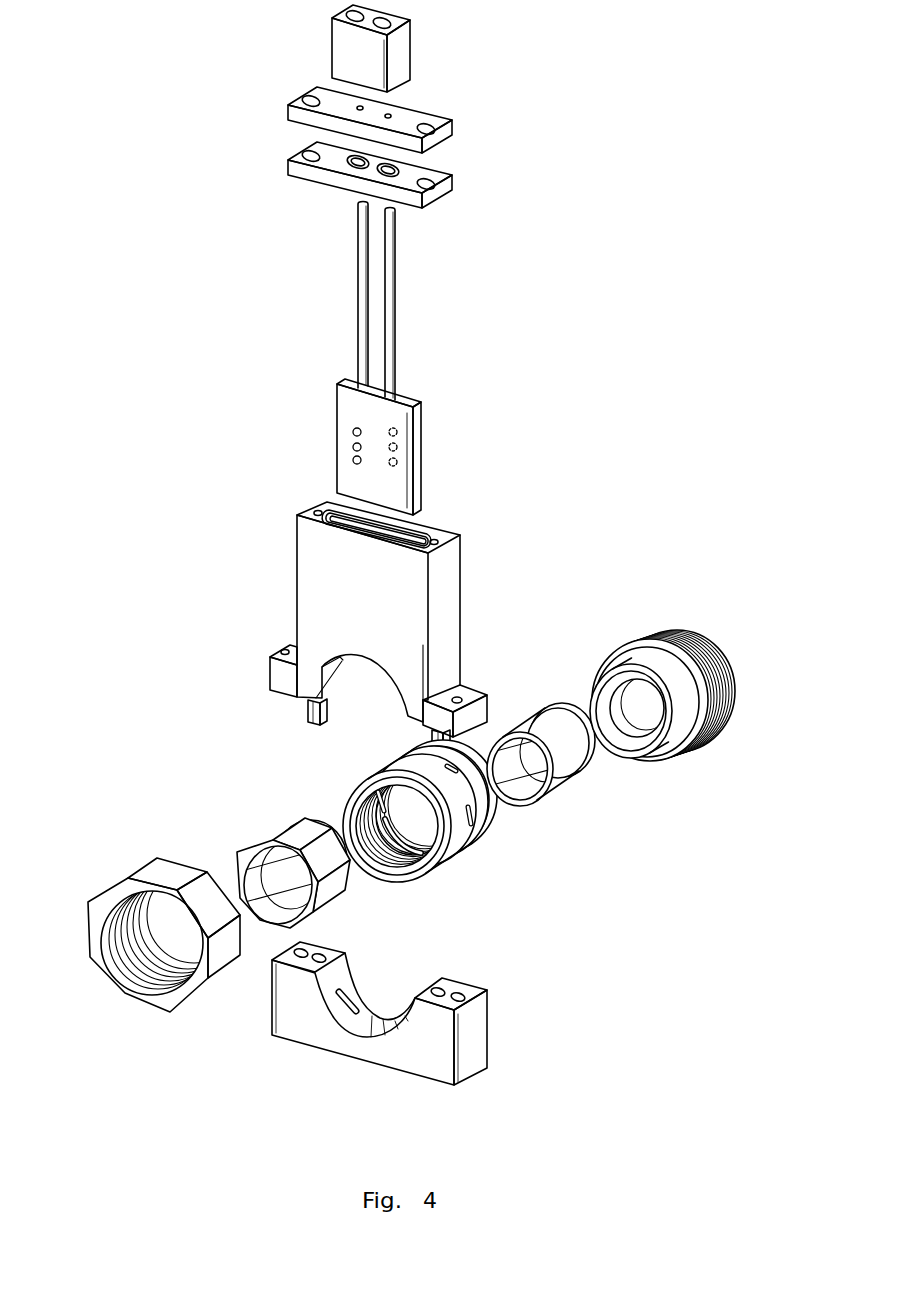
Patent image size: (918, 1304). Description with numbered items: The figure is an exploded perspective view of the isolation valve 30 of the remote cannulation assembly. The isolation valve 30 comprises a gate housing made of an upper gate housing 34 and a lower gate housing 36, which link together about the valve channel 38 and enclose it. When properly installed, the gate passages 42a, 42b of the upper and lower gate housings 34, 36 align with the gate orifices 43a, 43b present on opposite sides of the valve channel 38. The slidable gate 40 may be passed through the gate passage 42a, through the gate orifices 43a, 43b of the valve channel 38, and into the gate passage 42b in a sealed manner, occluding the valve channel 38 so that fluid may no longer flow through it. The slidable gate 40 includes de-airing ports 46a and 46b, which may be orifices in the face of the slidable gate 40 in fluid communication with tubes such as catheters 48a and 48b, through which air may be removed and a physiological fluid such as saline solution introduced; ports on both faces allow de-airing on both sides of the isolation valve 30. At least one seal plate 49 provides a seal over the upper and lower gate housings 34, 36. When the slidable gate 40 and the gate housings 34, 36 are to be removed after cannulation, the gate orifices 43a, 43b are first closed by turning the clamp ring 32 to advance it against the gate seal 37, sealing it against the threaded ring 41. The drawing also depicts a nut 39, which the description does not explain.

The isolation valve 30 is at (700, 388).
The clamp ring 32 is at (250, 842).
The upper gate housing 34 is at (452, 600).
The lower gate housing 36 is at (475, 1043).
The gate seal 37 is at (595, 782).
The valve channel 38 is at (497, 815).
The lock nut 39 is at (147, 873).
The slidable gate 40 is at (413, 430).
The threaded ring 41 is at (697, 743).
The gate passage 42a is at (417, 522).
The gate passage 42b is at (347, 1013).
The gate orifice 43a is at (450, 780).
The gate orifice 43b is at (477, 830).
The de-airing port 46a is at (352, 460).
The de-airing port 46b is at (414, 467).
The catheter 48a is at (360, 264).
The catheter 48b is at (392, 297).
The seal plate 49 is at (452, 223).